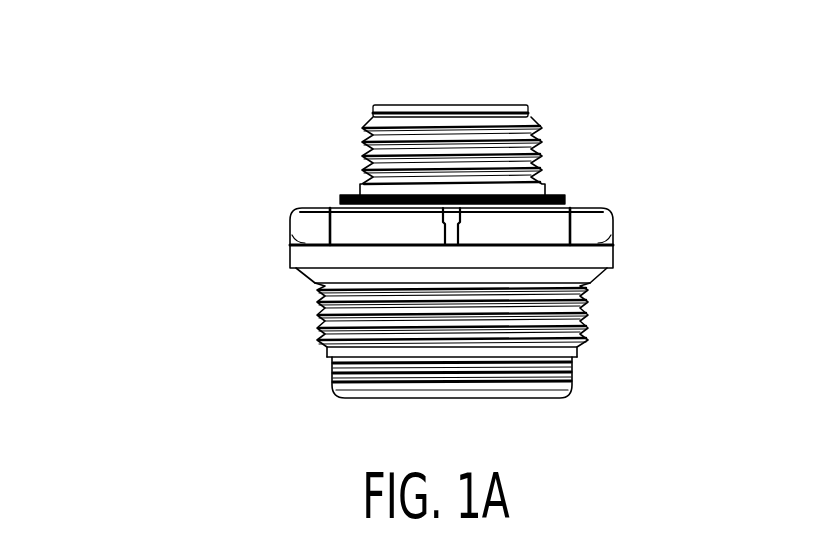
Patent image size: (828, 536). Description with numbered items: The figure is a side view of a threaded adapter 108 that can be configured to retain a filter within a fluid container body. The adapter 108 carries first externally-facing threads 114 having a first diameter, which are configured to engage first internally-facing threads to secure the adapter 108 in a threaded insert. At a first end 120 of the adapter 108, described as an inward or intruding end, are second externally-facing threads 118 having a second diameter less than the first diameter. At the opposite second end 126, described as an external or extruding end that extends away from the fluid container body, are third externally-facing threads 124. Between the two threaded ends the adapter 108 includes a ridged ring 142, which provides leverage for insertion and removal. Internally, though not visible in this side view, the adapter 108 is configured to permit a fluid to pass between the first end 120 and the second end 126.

The threaded adapter 108 is at (409, 208).
The third externally-facing threads 124 is at (340, 152).
The second end 126 is at (615, 115).
The ridged ring 142 is at (268, 228).
The first externally-facing threads 114 is at (298, 322).
The second externally-facing threads 118 is at (314, 378).
The first end 120 is at (617, 293).